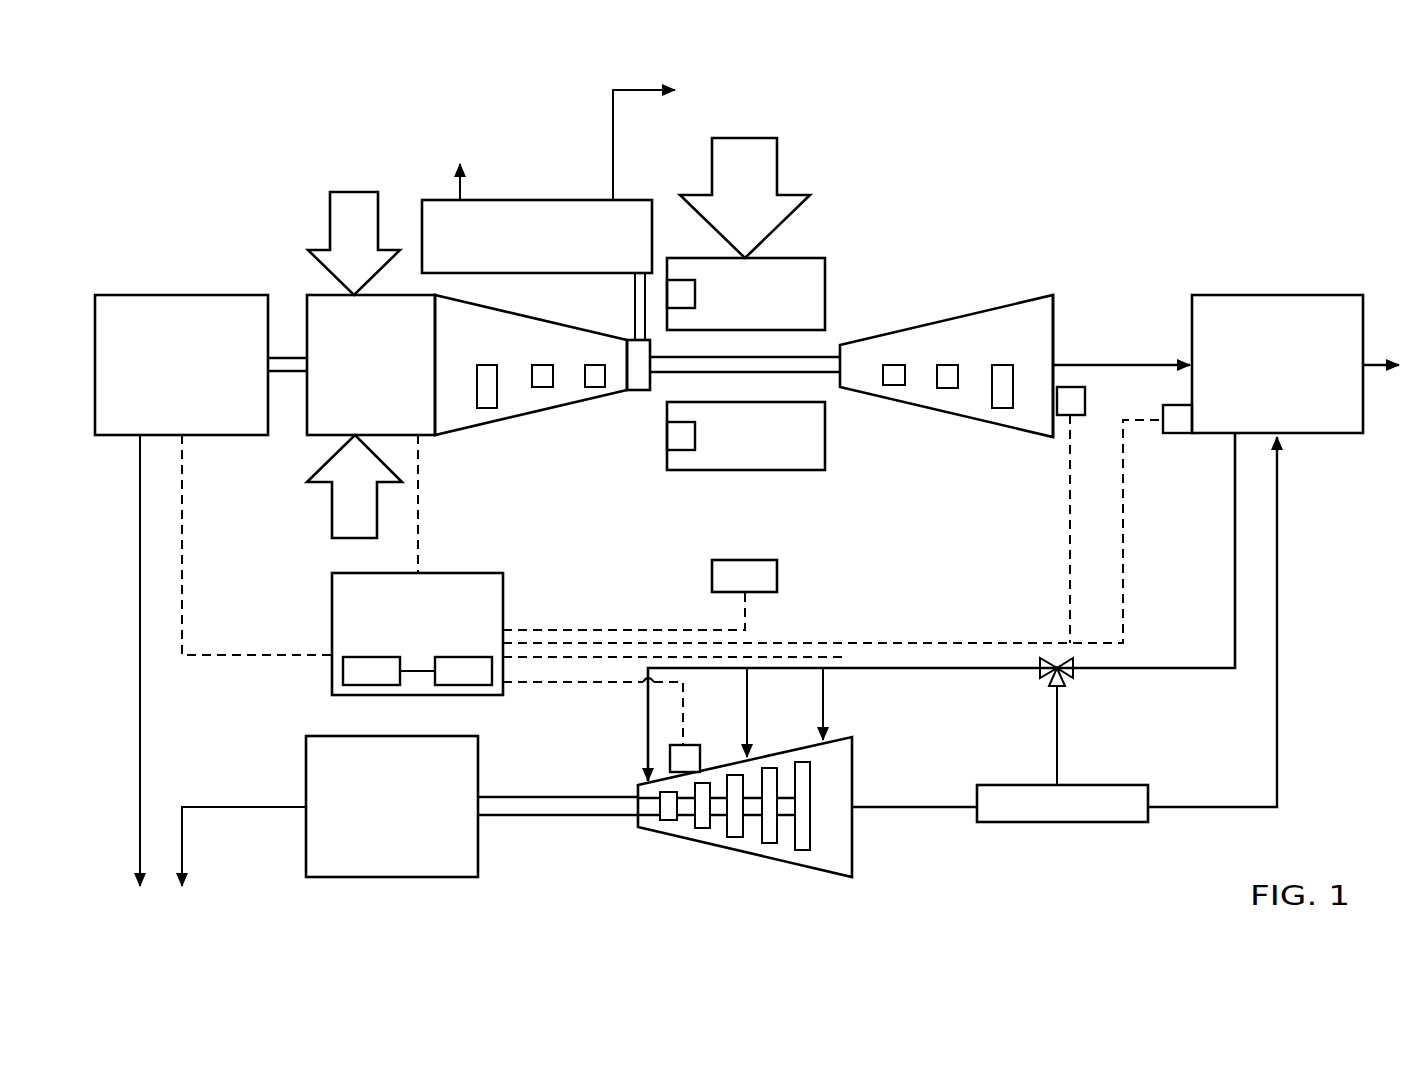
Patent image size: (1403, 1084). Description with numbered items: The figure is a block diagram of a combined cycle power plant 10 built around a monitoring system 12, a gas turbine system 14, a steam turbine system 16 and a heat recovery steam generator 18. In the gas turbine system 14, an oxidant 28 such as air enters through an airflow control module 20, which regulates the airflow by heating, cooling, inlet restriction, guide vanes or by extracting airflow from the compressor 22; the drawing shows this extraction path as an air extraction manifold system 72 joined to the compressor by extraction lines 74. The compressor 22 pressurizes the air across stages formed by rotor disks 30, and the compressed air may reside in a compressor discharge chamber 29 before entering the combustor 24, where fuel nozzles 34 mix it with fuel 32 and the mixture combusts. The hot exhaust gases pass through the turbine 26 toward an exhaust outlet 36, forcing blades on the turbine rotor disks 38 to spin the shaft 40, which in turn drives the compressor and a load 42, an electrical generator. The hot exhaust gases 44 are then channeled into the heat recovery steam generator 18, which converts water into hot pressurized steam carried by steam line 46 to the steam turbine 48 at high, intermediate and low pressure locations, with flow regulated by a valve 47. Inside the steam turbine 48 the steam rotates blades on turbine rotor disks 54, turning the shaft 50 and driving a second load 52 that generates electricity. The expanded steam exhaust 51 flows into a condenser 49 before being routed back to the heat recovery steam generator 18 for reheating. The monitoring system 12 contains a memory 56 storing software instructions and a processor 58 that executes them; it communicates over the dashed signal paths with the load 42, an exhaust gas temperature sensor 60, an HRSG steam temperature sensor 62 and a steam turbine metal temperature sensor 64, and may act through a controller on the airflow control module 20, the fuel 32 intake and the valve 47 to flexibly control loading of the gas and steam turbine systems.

The combined cycle power plant 10 is at (1117, 165).
The monitoring system 12 is at (470, 573).
The gas turbine system 14 is at (398, 198).
The steam turbine system 16 is at (930, 876).
The heat recovery steam generator (HRSG) 18 is at (1278, 295).
The airflow control module 20 is at (316, 293).
The compressor 22 is at (452, 436).
The combustor 24 is at (825, 292).
The turbine 26 is at (948, 318).
The oxidant 28 is at (330, 217).
The compressor discharge chamber 29 is at (642, 391).
The rotor disks 30 is at (487, 408).
The fuel 32 is at (712, 163).
The fuel nozzles 34 is at (695, 294).
The exhaust outlet 36 is at (1057, 318).
The turbine rotor disks 38 is at (893, 385).
The shaft 40 is at (289, 377).
The load 42 is at (182, 295).
The hot exhaust gases 44 is at (1118, 363).
The steam line 46 is at (942, 670).
The valve 47 is at (1073, 672).
The steam turbine 48 is at (783, 750).
The condenser 49 is at (1092, 823).
The shaft 50 is at (567, 818).
The steam exhaust 51 is at (937, 803).
The load 52 is at (393, 878).
The turbine rotor disks 54 is at (668, 820).
The memory 56 is at (370, 687).
The processor 58 is at (465, 687).
The exhaust gas temperature sensor 60 is at (1085, 400).
The HRSG steam temperature sensor 62 is at (1175, 435).
The steam turbine metal temperature sensor 64 is at (700, 758).
The air extraction manifold system 72 is at (512, 200).
The extraction lines 74 is at (635, 310).